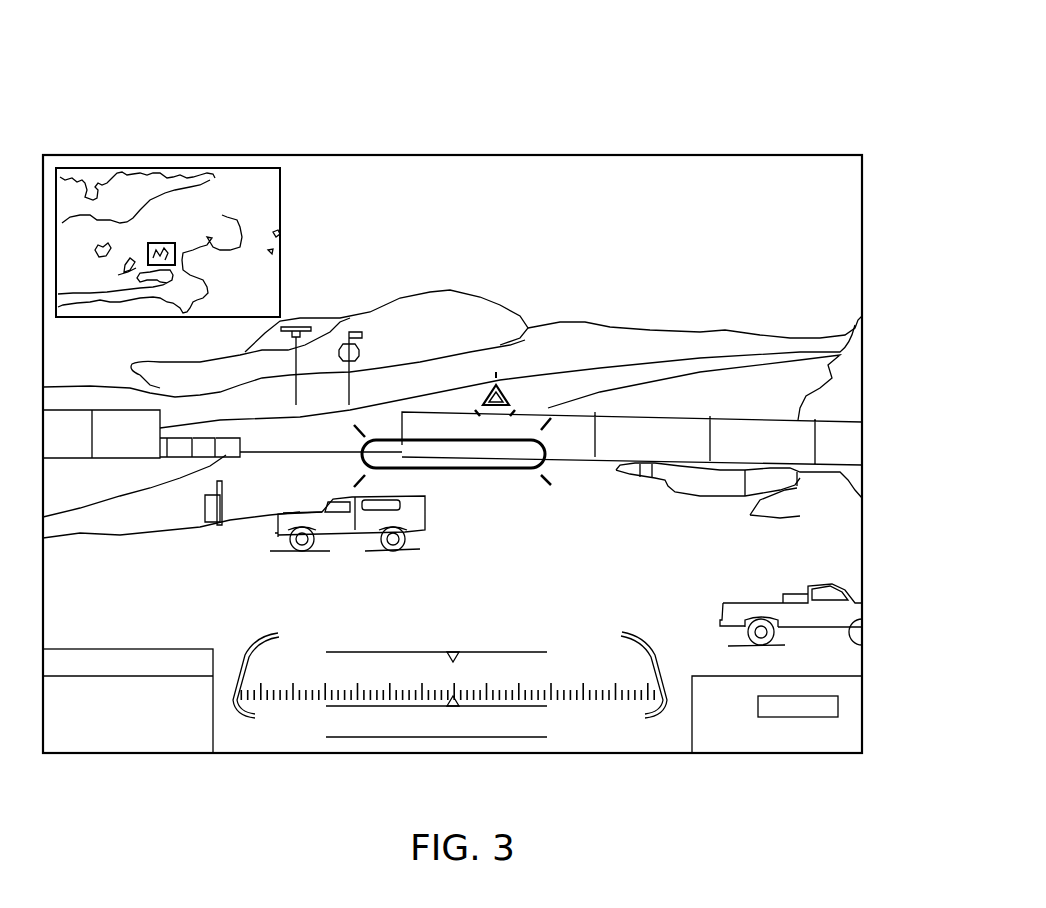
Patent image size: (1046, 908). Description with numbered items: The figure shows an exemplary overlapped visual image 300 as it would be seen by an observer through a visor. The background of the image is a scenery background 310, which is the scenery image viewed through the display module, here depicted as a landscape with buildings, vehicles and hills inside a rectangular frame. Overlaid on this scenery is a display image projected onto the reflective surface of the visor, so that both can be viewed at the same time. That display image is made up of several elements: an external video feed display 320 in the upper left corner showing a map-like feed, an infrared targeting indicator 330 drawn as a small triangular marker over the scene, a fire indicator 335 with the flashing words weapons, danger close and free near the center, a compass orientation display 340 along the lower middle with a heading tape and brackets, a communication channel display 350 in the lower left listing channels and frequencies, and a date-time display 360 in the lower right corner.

The visual image 300 is at (644, 60).
The scenery background 310 is at (514, 155).
The external video feed display 320 is at (281, 212).
The infrared targeting indicator 330 is at (497, 388).
The fire indicator 335 is at (515, 470).
The compass orientation display 340 is at (511, 652).
The communication channel display 350 is at (118, 649).
The date-time display 360 is at (712, 676).